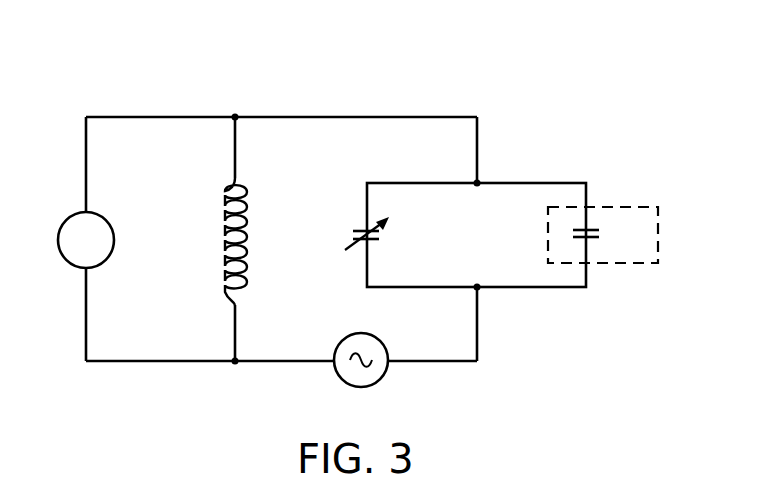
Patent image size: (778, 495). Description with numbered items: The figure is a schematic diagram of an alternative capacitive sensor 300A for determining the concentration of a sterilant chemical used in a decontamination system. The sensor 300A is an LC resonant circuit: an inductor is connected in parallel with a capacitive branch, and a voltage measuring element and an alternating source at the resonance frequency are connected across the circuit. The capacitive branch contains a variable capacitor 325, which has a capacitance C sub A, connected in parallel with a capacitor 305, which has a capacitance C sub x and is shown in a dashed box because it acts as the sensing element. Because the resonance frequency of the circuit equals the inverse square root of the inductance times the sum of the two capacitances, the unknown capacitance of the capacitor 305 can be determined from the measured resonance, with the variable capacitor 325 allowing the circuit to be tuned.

The sensor 300A is at (108, 87).
The variable capacitor 325 is at (360, 227).
The capacitor 305 is at (659, 227).